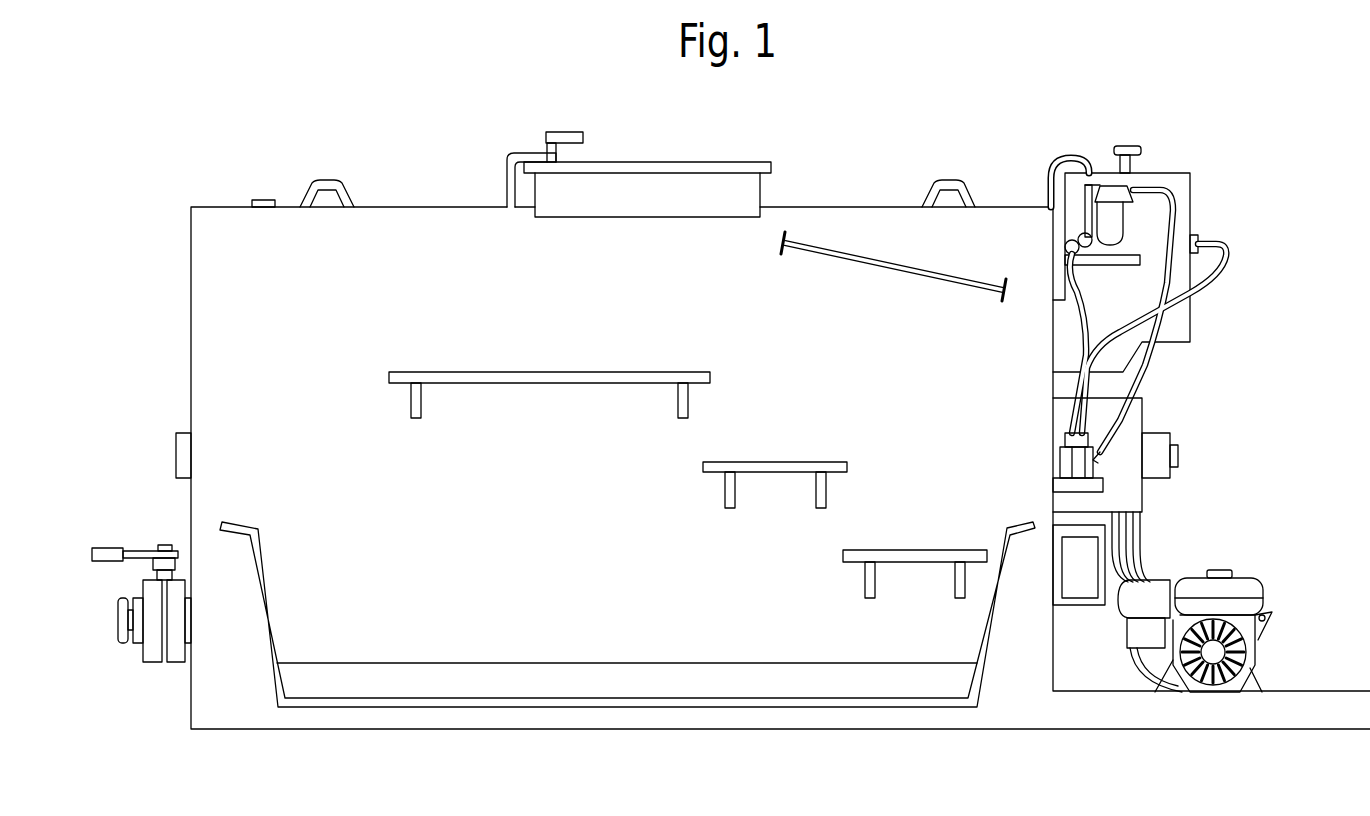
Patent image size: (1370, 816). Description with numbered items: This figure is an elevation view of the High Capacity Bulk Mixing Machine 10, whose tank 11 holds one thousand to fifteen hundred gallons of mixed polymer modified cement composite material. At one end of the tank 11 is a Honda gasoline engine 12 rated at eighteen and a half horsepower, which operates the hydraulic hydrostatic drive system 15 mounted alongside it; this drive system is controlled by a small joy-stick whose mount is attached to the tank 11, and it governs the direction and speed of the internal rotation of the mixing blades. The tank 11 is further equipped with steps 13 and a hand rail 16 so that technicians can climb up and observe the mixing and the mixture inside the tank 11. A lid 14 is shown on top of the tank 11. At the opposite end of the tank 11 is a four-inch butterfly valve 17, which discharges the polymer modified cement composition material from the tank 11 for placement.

The High Capacity Bulk Mixing Machine 10 is at (396, 138).
The tank 11 is at (328, 303).
The gasoline engine 12 is at (1270, 590).
The steps 13 is at (544, 372).
The lid 14 is at (651, 162).
The hydraulic hydrostatic drive system 15 is at (1180, 455).
The hand rail 16 is at (962, 277).
The butterfly valve 17 is at (115, 618).